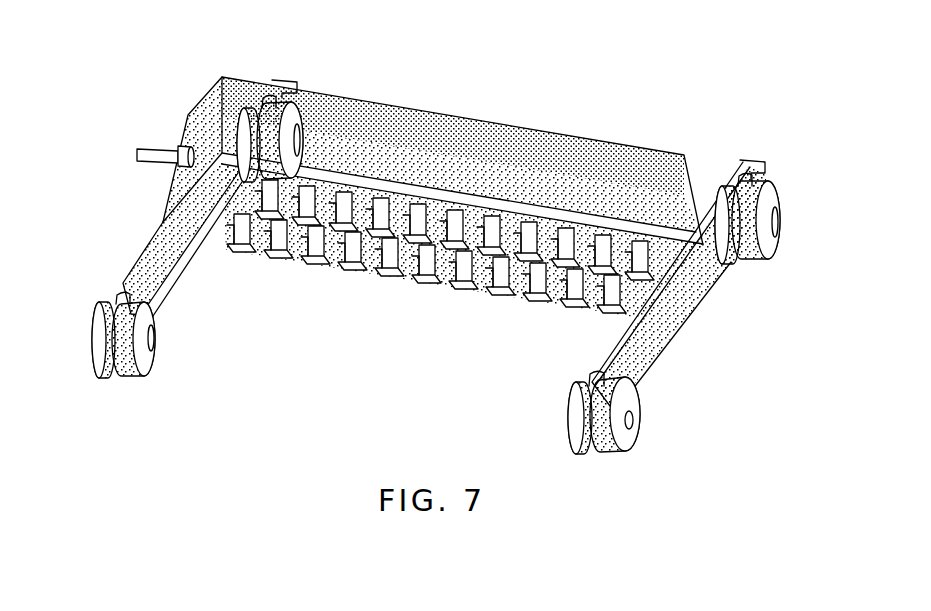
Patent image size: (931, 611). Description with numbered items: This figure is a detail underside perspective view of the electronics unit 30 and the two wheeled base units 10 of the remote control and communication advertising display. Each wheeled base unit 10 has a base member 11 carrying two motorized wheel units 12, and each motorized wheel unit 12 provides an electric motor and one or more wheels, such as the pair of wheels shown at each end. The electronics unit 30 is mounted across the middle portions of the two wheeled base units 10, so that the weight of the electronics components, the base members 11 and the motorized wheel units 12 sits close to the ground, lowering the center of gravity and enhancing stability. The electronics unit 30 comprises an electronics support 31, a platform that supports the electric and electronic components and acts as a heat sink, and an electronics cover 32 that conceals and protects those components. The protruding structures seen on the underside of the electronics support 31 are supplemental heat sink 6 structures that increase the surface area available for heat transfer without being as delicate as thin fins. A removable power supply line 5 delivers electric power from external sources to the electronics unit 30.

The electronics unit 30 is at (148, 113).
The electronics cover 32 is at (420, 114).
The electronics support 31 is at (474, 288).
The supplemental heat sink 6 is at (428, 287).
The removable power supply line 5 is at (156, 161).
The wheeled base unit 10 is at (172, 323).
The base member 11 is at (183, 277).
The motorized wheel unit 12 is at (301, 118).